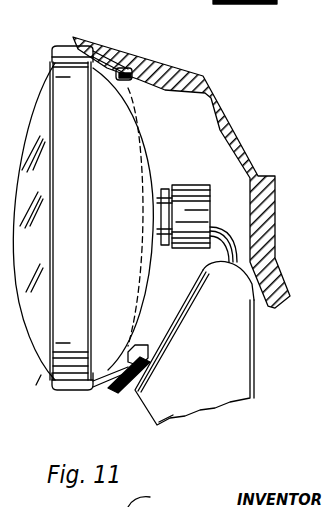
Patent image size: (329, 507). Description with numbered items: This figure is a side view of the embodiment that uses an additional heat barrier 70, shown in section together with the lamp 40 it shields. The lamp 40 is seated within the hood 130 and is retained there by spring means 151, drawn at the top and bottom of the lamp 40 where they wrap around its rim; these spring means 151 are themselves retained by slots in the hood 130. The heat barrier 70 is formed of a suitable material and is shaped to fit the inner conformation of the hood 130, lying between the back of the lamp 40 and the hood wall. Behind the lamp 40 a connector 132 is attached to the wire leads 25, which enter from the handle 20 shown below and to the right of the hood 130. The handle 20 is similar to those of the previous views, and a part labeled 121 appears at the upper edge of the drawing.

The handle 20 is at (215, 335).
The wire leads 25 is at (214, 236).
The lamp 40 is at (82, 209).
The heat barrier 70 is at (141, 126).
The mounting member 121 is at (249, 0).
The hood 130 is at (175, 76).
The connector 132 is at (184, 186).
The spring means 151 is at (66, 48).